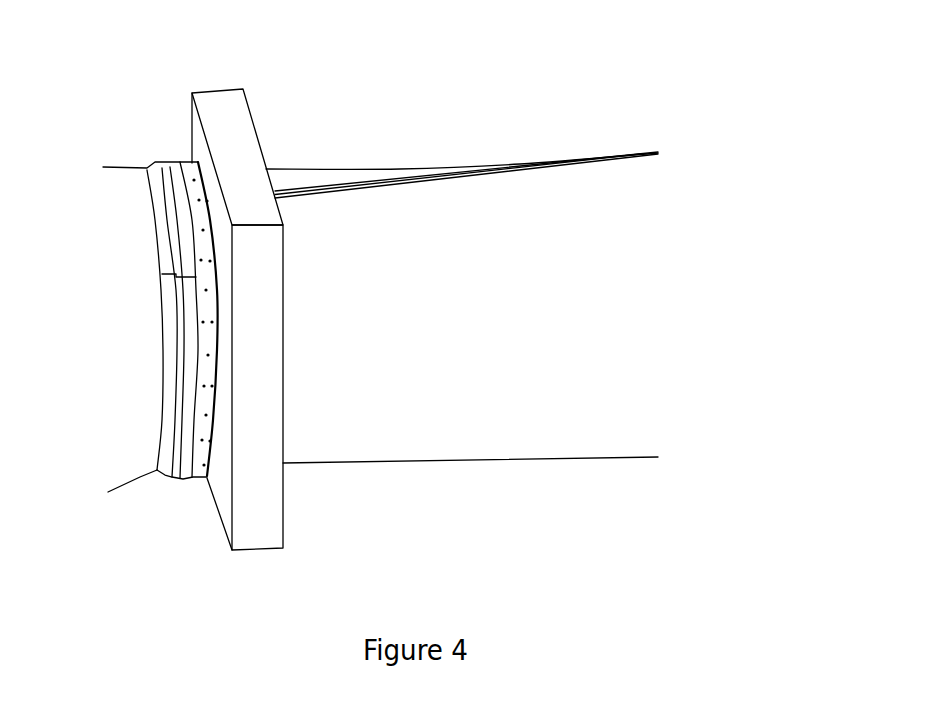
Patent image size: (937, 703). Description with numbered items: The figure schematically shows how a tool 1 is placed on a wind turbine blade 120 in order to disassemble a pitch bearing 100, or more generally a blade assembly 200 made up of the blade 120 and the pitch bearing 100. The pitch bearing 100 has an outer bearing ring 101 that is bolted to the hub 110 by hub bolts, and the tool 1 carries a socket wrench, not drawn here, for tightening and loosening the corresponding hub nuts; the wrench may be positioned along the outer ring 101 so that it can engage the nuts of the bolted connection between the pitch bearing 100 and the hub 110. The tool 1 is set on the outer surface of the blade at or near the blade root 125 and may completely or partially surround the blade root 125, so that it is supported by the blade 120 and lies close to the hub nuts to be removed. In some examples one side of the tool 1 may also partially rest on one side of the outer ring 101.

The tool 1 is at (228, 92).
The pitch bearing 100 is at (193, 500).
The outer bearing ring 101 is at (188, 163).
The hub 110 is at (118, 165).
The wind turbine blade 120 is at (332, 180).
The blade root 125 is at (320, 502).
The blade assembly 200 is at (290, 138).